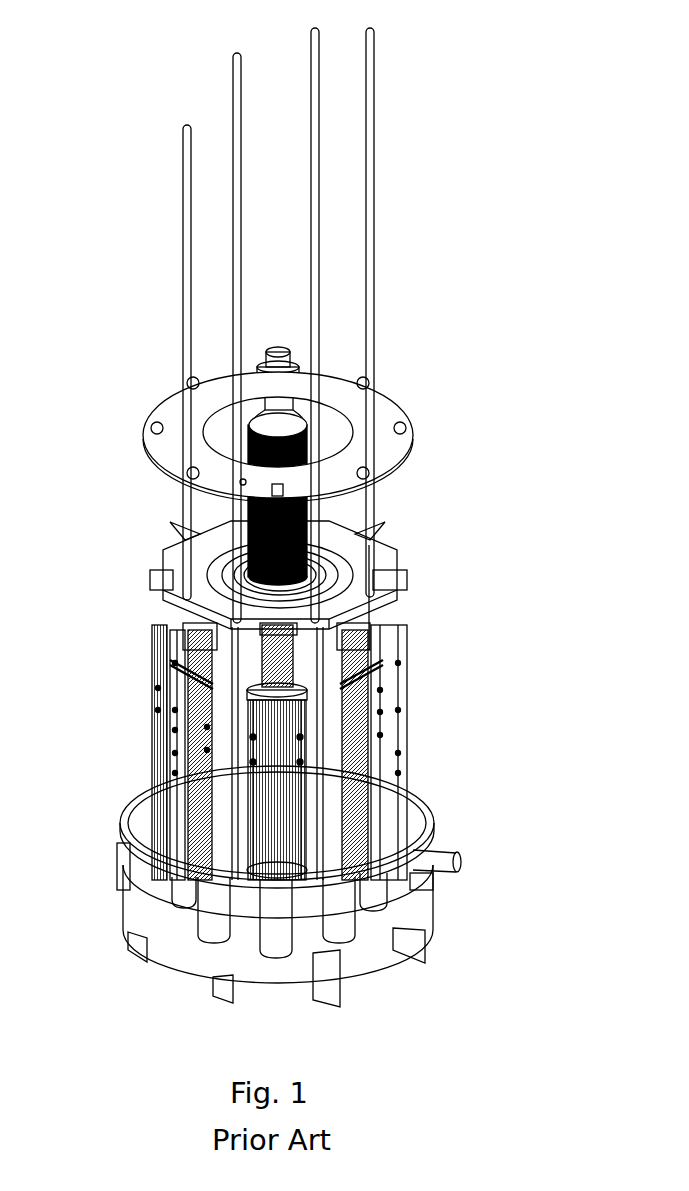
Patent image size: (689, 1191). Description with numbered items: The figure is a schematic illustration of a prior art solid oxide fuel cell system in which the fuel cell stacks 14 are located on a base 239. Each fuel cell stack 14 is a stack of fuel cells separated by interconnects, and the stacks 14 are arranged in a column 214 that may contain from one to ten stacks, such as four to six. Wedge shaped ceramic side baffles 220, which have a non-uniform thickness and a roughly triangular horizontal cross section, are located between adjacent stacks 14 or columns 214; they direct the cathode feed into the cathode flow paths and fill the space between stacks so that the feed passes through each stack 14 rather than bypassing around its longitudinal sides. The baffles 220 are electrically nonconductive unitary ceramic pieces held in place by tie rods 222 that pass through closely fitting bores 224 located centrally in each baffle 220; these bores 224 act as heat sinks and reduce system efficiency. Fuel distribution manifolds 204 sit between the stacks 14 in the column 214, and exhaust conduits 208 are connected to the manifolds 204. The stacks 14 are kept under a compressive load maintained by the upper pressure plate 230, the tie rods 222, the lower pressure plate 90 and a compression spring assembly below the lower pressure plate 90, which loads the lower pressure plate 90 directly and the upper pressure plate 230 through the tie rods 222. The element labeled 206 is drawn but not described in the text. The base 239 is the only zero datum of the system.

The solid oxide fuel cell stack 14 is at (296, 668).
The lower pressure plate 90 is at (429, 812).
The fuel distribution manifold 204 is at (258, 805).
The outer column 206 is at (173, 753).
The exhaust conduit 208 is at (203, 778).
The column of fuel cell stacks 214 is at (225, 747).
The wedge shaped ceramic side baffle 220 is at (387, 553).
The tie rod 222 is at (185, 220).
The bore 224 is at (180, 588).
The upper pressure plate 230 is at (157, 411).
The base 239 is at (126, 890).